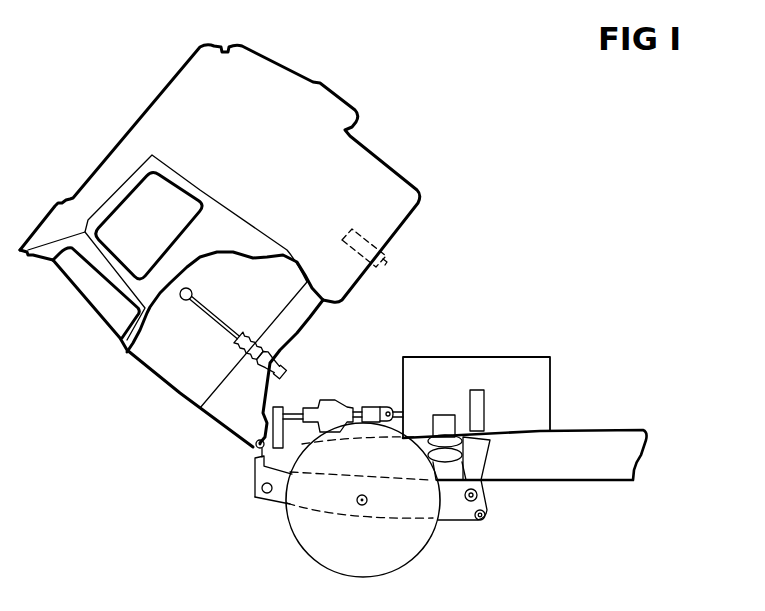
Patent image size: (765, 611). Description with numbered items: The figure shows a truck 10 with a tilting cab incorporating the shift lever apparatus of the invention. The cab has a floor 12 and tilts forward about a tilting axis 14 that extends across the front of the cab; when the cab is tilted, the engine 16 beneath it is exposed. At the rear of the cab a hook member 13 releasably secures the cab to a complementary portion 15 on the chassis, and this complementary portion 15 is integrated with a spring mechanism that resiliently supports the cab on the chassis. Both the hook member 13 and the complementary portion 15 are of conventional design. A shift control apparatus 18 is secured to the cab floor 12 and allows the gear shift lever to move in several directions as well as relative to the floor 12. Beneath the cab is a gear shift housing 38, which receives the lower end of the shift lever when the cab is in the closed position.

The truck 10 is at (585, 154).
The floor 12 is at (220, 383).
The hook member 13 is at (383, 261).
The tilting axis 14 is at (255, 447).
The complementary portion 15 is at (439, 414).
The engine 16 is at (540, 385).
The shift control apparatus 18 is at (207, 318).
The gear shift housing 38 is at (332, 410).